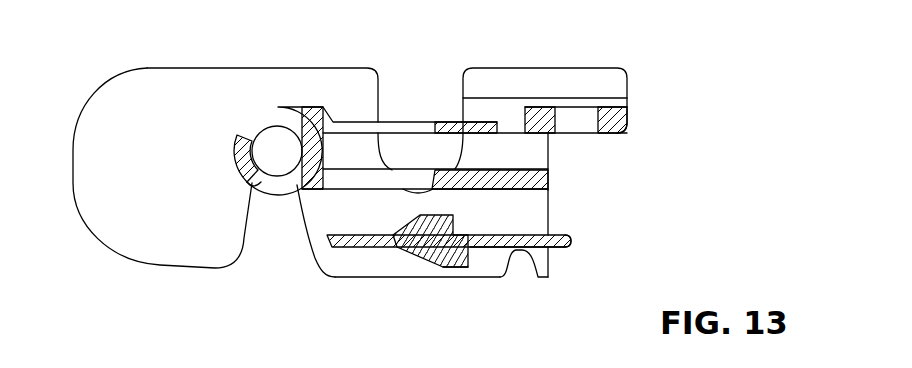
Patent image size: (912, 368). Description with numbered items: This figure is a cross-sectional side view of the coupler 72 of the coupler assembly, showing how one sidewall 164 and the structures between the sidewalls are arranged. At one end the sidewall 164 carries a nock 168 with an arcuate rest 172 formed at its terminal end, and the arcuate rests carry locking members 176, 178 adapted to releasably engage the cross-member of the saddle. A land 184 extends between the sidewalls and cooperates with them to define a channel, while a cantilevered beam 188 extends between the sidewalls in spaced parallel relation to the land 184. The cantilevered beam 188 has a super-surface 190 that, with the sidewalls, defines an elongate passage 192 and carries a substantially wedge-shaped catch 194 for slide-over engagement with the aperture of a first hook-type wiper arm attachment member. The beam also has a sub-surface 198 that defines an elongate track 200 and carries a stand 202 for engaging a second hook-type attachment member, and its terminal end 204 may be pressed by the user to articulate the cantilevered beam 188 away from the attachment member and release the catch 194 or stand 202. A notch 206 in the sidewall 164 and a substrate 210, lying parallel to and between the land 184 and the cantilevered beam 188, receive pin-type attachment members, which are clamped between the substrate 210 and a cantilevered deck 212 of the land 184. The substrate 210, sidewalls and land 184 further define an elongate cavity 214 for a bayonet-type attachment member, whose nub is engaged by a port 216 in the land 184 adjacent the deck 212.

The coupler 72 is at (68, 99).
The sidewall 164 is at (155, 77).
The arcuate rest 172 is at (274, 124).
The locking member 178 is at (307, 188).
The locking member 176 is at (258, 183).
The nock 168 is at (271, 243).
The notch 206 is at (398, 72).
The deck 212 is at (460, 130).
The land 184 is at (627, 120).
The port 216 is at (583, 97).
The elongate cavity 214 is at (566, 162).
The substrate 210 is at (548, 183).
The elongate passage 192 is at (561, 211).
The super-surface 190 is at (566, 234).
The terminal end 204 is at (572, 247).
The cantilevered beam 188 is at (560, 252).
The catch 194 is at (476, 236).
The stand 202 is at (450, 268).
The sub-surface 198 is at (512, 258).
The elongate track 200 is at (549, 281).